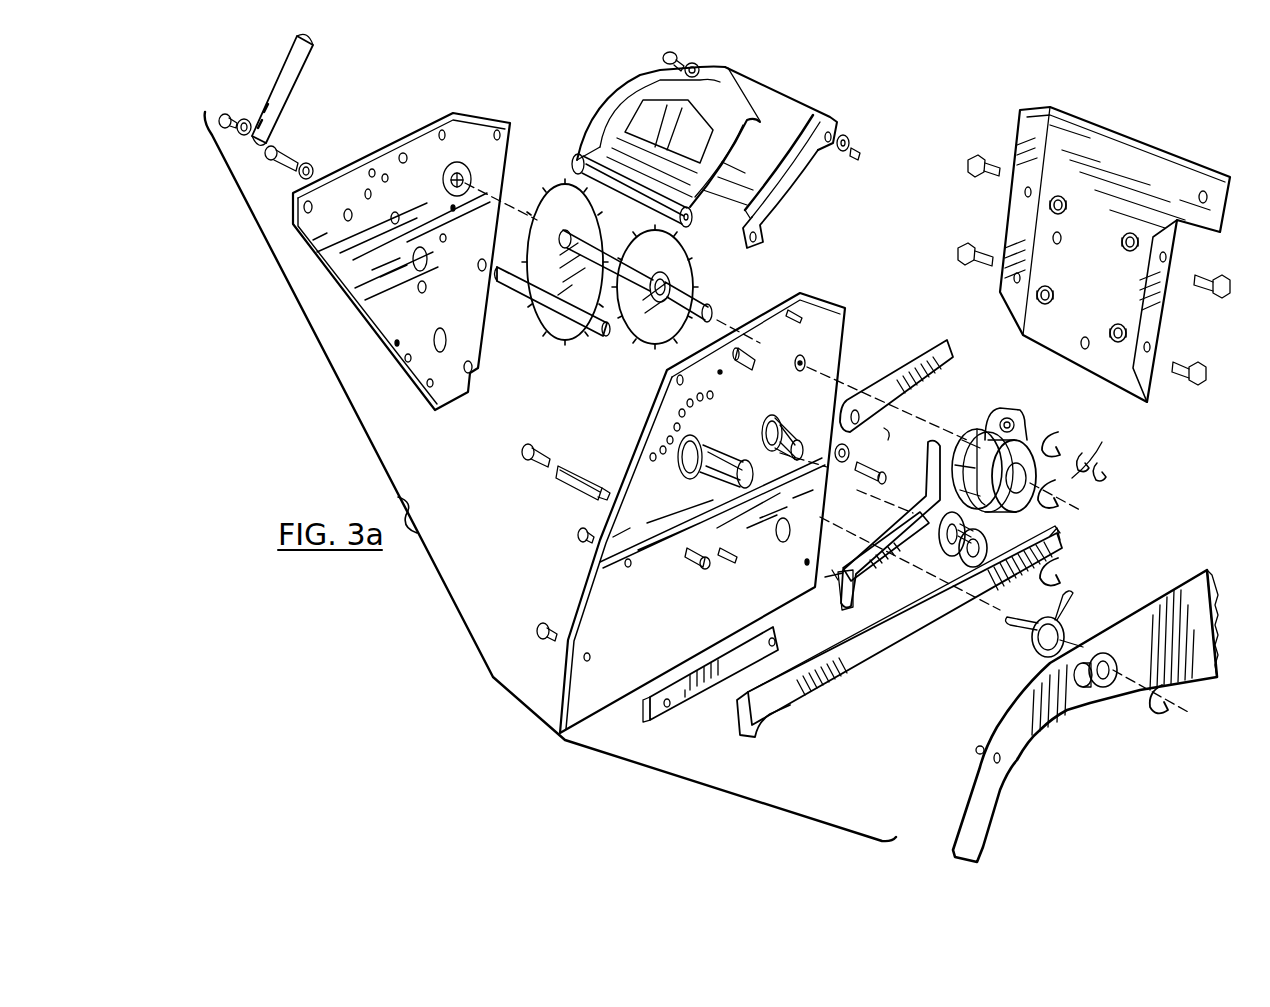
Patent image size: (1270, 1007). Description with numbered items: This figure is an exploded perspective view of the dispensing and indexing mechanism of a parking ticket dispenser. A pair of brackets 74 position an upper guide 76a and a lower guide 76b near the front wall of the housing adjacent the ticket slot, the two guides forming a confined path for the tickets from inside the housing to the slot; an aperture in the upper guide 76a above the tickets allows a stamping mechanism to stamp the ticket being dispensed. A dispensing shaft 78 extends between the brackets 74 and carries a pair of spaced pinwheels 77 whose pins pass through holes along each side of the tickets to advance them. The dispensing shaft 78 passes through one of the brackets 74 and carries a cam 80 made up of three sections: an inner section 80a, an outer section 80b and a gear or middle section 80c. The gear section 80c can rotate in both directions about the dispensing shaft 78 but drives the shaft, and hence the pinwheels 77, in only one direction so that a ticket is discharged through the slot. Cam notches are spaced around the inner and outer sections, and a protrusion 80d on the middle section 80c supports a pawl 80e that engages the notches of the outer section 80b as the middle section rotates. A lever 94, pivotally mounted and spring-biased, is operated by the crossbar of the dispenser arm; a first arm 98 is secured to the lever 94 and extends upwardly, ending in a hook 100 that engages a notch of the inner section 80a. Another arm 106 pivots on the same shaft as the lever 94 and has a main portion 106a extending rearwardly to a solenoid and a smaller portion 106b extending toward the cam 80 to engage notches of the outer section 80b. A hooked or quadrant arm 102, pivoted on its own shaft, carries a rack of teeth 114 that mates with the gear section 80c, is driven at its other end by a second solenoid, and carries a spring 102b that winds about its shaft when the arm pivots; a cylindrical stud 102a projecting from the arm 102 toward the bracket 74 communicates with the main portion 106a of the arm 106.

The brackets 74 is at (583, 590).
The upper guide 76a is at (607, 112).
The lower guide 76b is at (790, 93).
The pinwheels 77 is at (580, 323).
The dispensing shaft 78 is at (703, 303).
The cam 80 is at (1025, 425).
The inner section 80a is at (955, 443).
The outer section 80b is at (1027, 457).
The gear or middle section 80c is at (1028, 420).
The protrusion 80d is at (995, 408).
The pawl 80e is at (1093, 452).
The lever 94 is at (853, 583).
The first arm 98 is at (913, 500).
The hook 100 is at (935, 448).
The hooked or quadrant arm 102 is at (1096, 695).
The cylindrical stud 102a is at (977, 747).
The spring 102b is at (1067, 617).
The arm 106 is at (899, 625).
The main portion 106a is at (843, 670).
The smaller portion 106b is at (1053, 528).
The rack of teeth 114 is at (1220, 573).